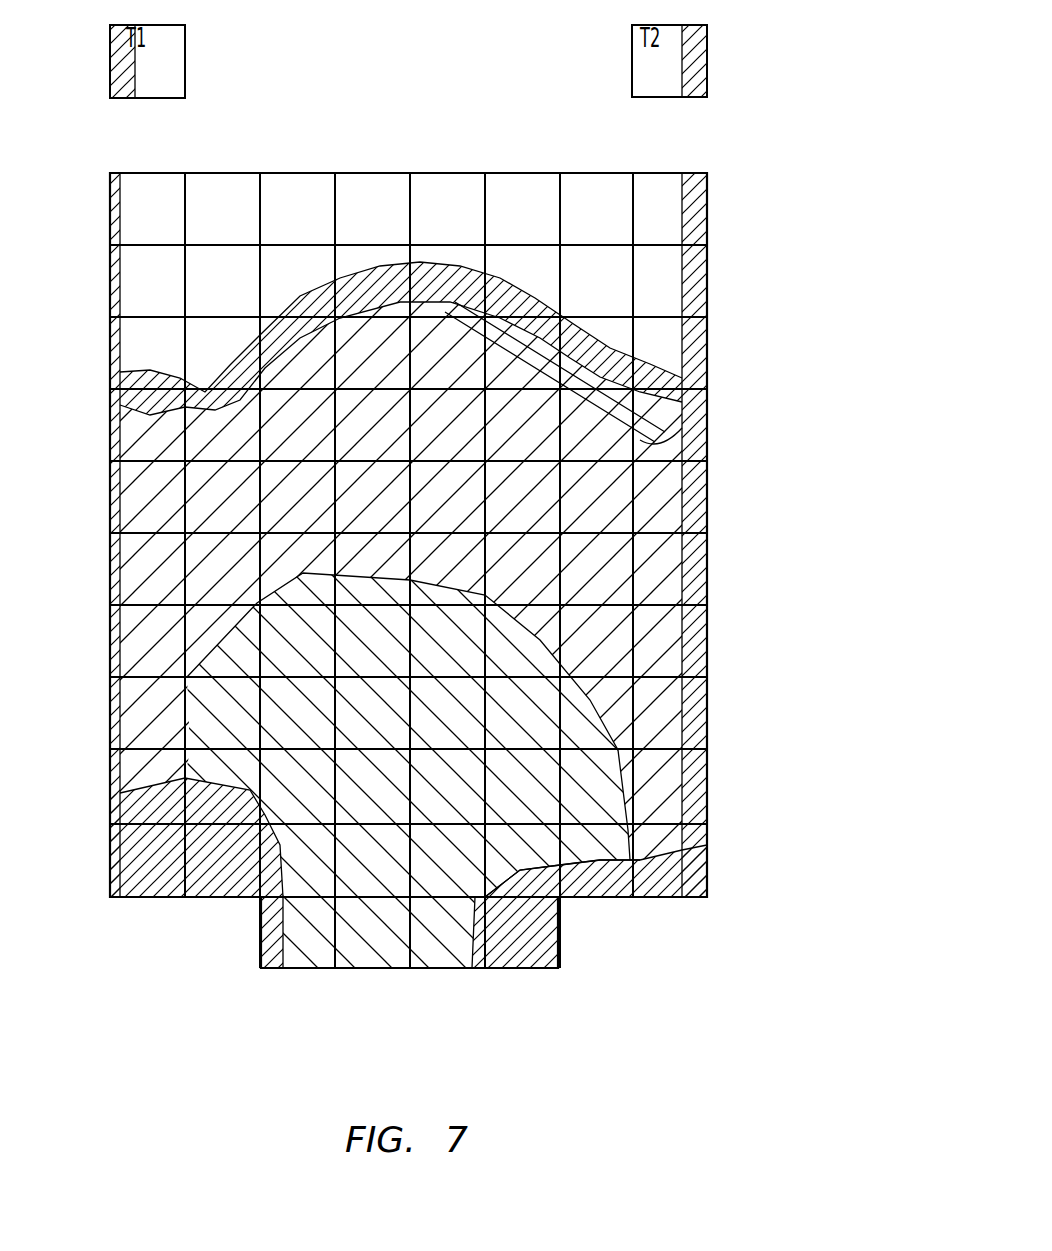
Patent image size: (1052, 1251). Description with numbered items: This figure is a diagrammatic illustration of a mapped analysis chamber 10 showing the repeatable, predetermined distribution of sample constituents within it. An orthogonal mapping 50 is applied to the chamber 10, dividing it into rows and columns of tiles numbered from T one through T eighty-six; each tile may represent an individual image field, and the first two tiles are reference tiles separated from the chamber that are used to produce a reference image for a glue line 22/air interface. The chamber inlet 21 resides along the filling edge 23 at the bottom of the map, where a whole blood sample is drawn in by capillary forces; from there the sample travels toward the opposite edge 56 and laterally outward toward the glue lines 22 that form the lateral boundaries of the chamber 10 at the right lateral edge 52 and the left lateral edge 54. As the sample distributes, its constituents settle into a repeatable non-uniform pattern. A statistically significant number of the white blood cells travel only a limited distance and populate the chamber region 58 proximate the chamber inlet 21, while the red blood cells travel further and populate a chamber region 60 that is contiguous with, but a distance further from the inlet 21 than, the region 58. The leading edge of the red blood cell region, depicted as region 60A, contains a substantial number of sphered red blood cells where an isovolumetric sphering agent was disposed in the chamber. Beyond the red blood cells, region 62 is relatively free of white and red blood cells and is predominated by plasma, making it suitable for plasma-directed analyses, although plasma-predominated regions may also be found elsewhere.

The analysis chamber 10 is at (720, 138).
The chamber inlet 21 is at (350, 968).
The glue line 22 is at (707, 583).
The filling edge 23 is at (440, 968).
The orthogonal mapping 50 is at (437, 162).
The right lateral edge 52 is at (720, 498).
The left lateral edge 54 is at (110, 515).
The edge opposite the filling edge 56 is at (303, 172).
The chamber region populated by WBCs 58 is at (573, 855).
The chamber region populated by RBCs 60 is at (160, 592).
The leading edge of the RBC region 60A is at (707, 419).
The plasma-predominated region 62 is at (707, 361).